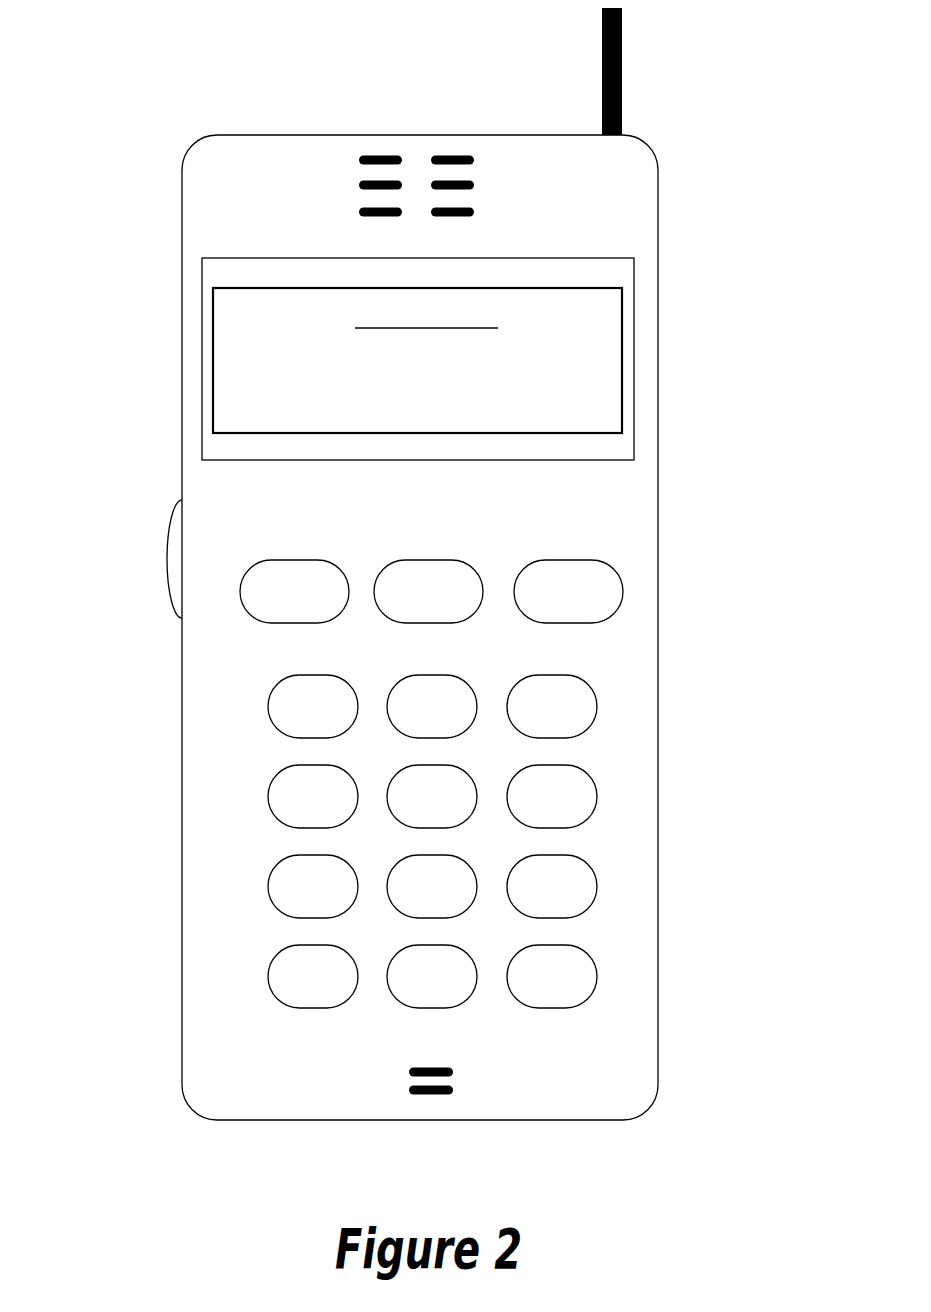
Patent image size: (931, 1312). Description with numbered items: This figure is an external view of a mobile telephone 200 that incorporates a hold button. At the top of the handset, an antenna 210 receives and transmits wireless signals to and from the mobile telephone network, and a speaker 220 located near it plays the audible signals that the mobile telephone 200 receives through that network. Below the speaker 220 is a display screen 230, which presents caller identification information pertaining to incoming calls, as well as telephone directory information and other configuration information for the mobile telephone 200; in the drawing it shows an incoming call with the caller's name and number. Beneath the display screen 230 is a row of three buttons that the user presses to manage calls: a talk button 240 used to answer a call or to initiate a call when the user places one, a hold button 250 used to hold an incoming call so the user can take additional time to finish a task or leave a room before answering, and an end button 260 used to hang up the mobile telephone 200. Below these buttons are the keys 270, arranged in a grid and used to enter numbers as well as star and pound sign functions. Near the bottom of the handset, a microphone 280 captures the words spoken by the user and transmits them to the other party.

The mobile telephone 200 is at (349, 560).
The antenna 210 is at (556, 71).
The speaker 220 is at (347, 149).
The display screen 230 is at (358, 359).
The talk button 240 is at (274, 563).
The hold button 250 is at (408, 563).
The end button 260 is at (549, 563).
The keys 270 is at (560, 829).
The microphone 280 is at (356, 1117).